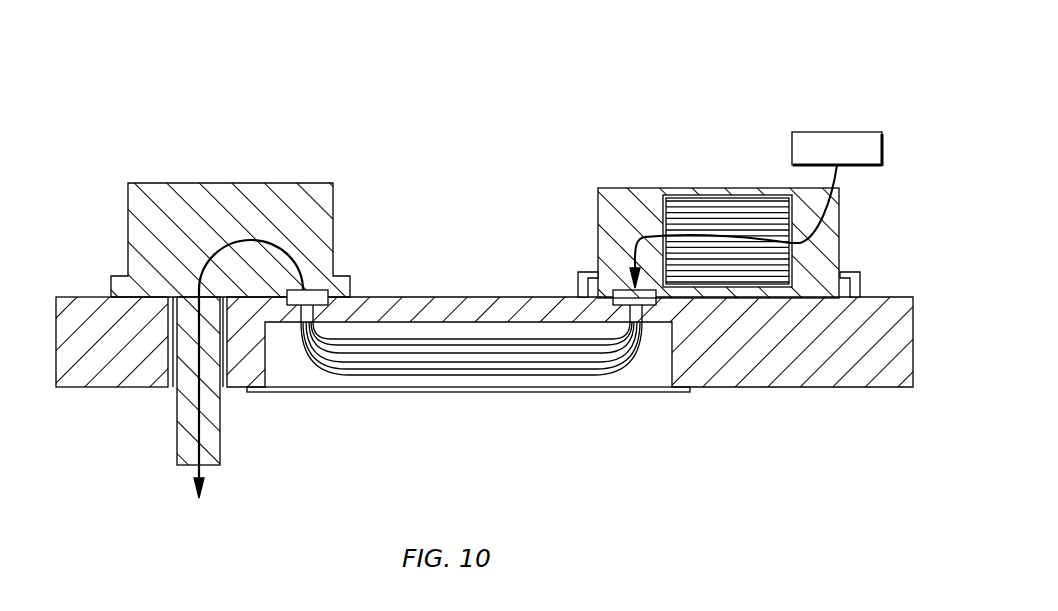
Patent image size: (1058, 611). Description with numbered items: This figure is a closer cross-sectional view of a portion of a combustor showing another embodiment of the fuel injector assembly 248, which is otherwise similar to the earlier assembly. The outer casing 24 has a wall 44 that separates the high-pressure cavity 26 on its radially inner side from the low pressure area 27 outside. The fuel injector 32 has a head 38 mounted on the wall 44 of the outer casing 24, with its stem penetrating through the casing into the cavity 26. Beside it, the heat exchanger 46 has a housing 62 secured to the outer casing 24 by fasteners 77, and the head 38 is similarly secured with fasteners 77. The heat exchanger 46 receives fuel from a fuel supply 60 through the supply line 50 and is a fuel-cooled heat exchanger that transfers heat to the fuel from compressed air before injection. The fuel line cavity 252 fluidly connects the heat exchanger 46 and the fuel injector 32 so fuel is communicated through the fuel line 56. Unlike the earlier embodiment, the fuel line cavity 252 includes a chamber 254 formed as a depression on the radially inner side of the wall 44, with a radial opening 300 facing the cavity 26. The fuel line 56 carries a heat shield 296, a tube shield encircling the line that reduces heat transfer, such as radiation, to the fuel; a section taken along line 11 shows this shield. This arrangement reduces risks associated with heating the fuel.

The fuel injector 32 is at (112, 72).
The head 38 is at (157, 183).
The low pressure area 27 is at (448, 95).
The cavity 26 is at (553, 477).
The fuel injector assembly 248 is at (638, 62).
The heat exchanger 46 is at (690, 120).
The wall 44 is at (893, 343).
The outer casing 24 is at (892, 282).
The fuel line cavity 252 is at (672, 362).
The chamber 254 is at (283, 375).
The heat shield 296 is at (575, 375).
The radial opening 300 is at (307, 369).
The fuel line 56 is at (322, 338).
The section line 11 is at (410, 275).
The housing 62 is at (623, 188).
The fuel supply 60 is at (845, 130).
The supply line 50 is at (837, 170).
The fasteners 77 is at (587, 248).